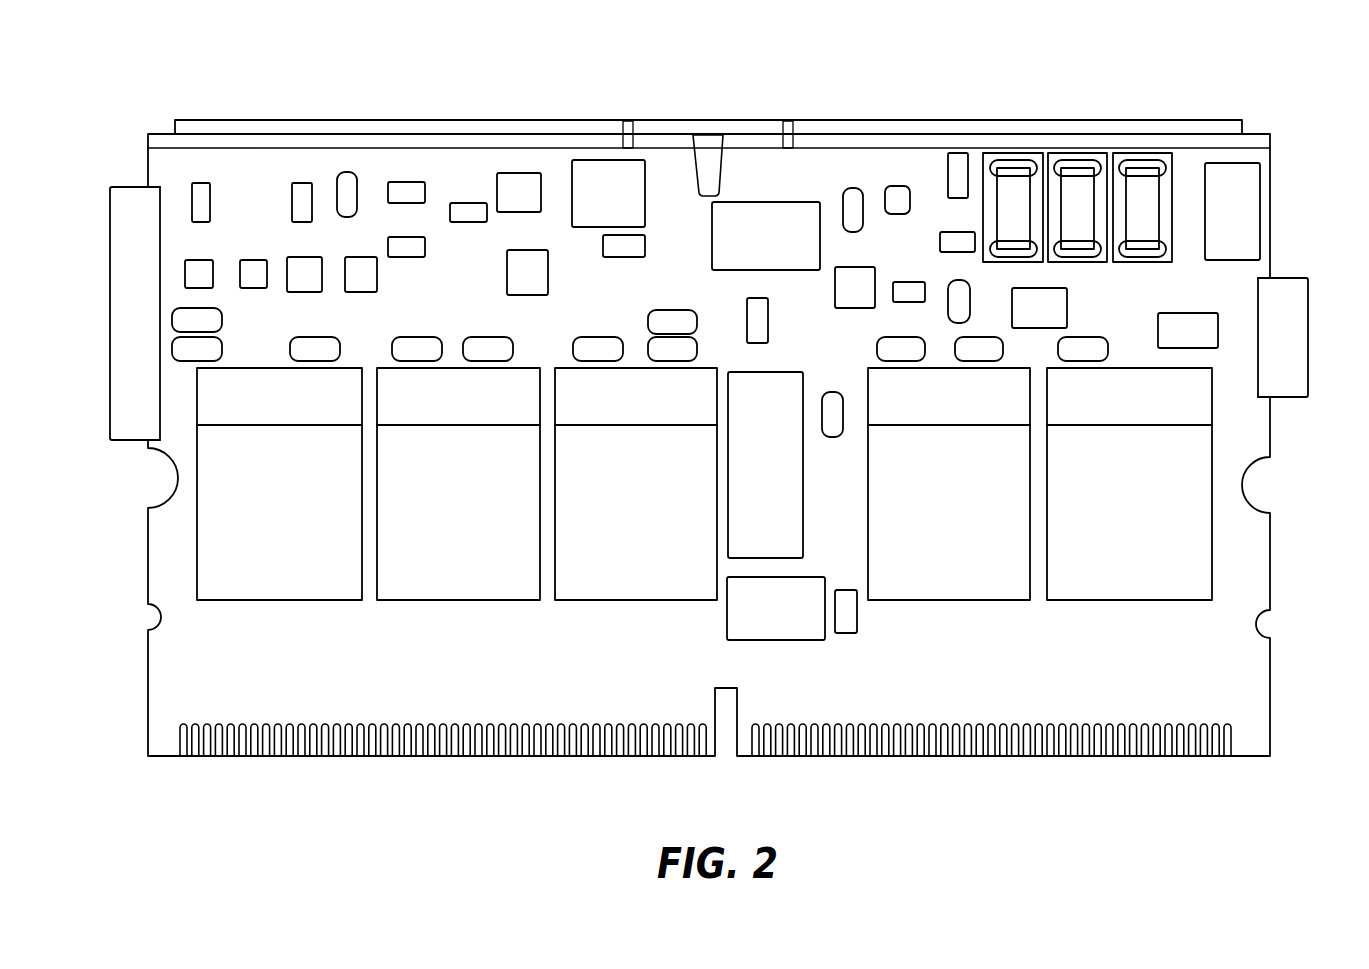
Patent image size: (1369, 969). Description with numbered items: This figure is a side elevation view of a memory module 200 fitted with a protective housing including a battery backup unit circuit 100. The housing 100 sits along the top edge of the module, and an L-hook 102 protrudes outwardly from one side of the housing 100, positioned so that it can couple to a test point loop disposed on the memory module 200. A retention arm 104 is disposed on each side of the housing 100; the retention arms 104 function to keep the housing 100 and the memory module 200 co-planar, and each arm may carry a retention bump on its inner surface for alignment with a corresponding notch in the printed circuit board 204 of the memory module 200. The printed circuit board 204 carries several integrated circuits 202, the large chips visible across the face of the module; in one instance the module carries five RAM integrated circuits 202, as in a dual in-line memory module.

The memory module 200 is at (1016, 86).
The protective housing including a battery backup unit circuit 100 is at (1216, 137).
The L-hook 102 is at (708, 153).
The retention arm 104 is at (130, 318).
The integrated circuit 202 is at (278, 558).
The printed circuit board 204 is at (1257, 556).